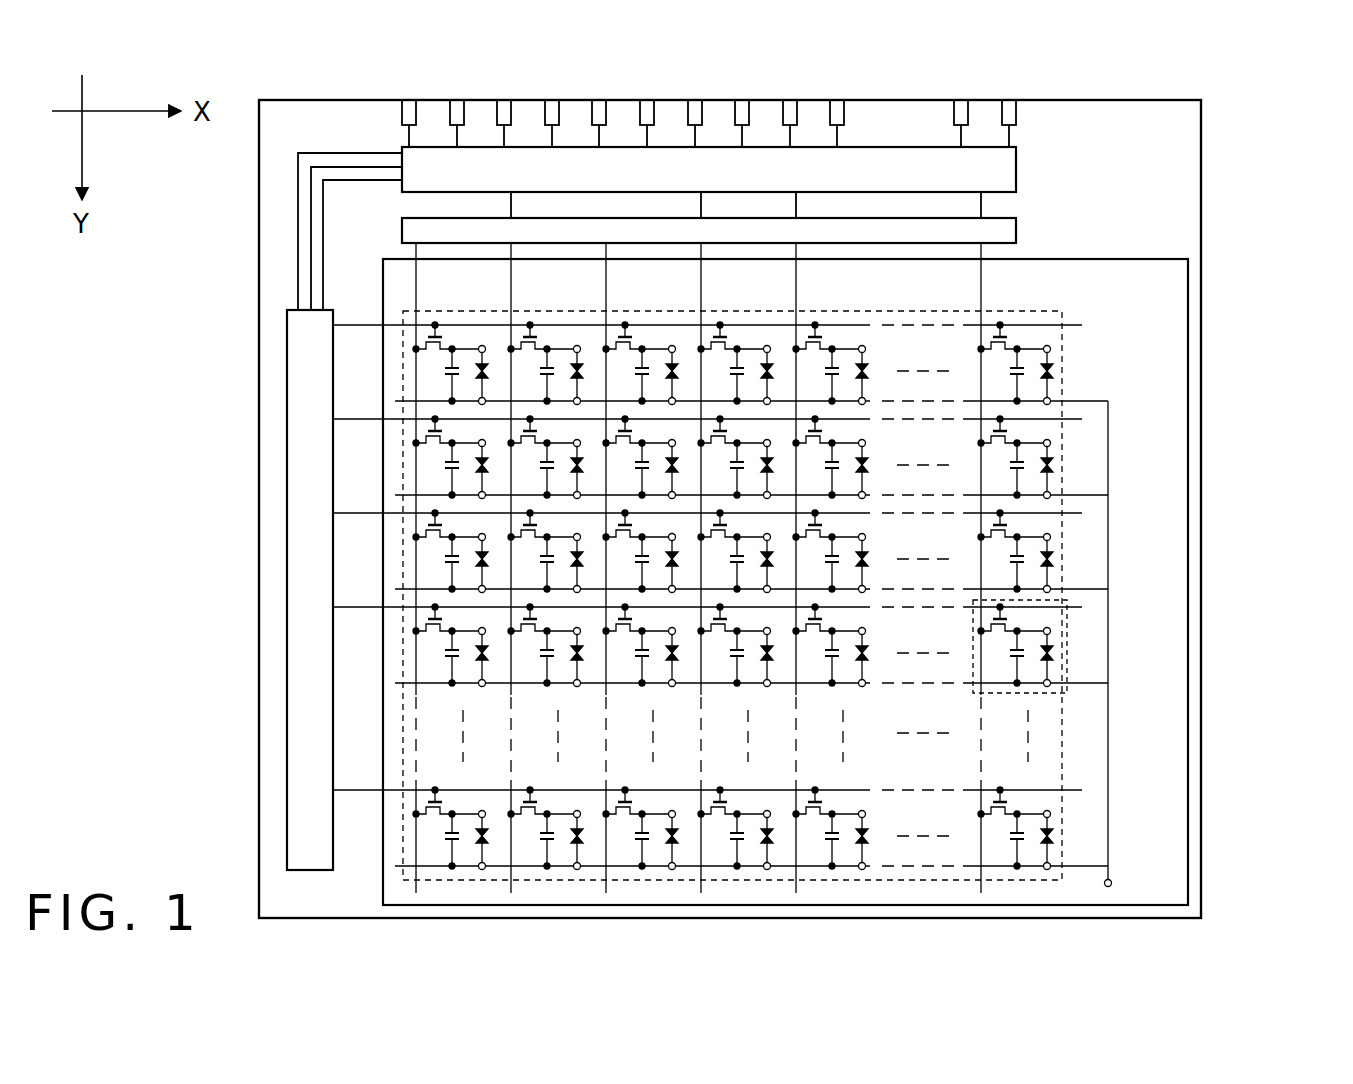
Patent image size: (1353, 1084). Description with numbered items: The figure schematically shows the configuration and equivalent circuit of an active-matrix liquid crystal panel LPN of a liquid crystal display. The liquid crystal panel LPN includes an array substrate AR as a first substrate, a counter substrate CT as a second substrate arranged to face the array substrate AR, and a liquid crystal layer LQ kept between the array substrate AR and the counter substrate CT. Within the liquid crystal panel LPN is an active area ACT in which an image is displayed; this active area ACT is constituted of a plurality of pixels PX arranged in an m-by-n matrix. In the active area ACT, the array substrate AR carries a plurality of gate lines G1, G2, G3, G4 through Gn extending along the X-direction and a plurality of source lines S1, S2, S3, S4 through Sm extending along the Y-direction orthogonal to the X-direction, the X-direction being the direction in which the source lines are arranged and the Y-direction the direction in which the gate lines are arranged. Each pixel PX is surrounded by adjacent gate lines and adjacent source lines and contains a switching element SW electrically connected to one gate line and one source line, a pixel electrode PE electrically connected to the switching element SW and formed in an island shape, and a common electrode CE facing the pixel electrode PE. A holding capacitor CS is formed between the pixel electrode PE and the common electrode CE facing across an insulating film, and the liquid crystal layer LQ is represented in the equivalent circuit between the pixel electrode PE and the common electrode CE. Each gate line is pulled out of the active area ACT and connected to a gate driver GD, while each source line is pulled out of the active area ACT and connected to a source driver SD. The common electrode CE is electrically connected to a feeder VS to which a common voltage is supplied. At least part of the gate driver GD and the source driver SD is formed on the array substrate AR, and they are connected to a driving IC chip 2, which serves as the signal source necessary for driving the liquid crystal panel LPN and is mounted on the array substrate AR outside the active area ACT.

The liquid crystal panel LPN is at (1250, 127).
The array substrate AR is at (1187, 161).
The counter substrate CT is at (1189, 293).
The driving IC chip 2 is at (1017, 168).
The source driver SD is at (1017, 229).
The gate driver GD is at (287, 718).
The gate line G1 is at (355, 325).
The gate line G2 is at (355, 419).
The gate line G3 is at (355, 513).
The gate line G4 is at (355, 607).
The gate line Gn is at (355, 790).
The source line S1 is at (418, 290).
The source line S2 is at (513, 290).
The source line S3 is at (608, 290).
The source line S4 is at (703, 290).
The source line Sm is at (983, 290).
The active area ACT is at (1063, 435).
The pixel PX is at (1036, 658).
The switching element SW is at (985, 622).
The holding capacitor CS is at (1003, 657).
The pixel electrode PE is at (1051, 629).
The liquid crystal layer LQ is at (1056, 650).
The common electrode CE is at (1051, 681).
The feeder VS is at (1112, 883).